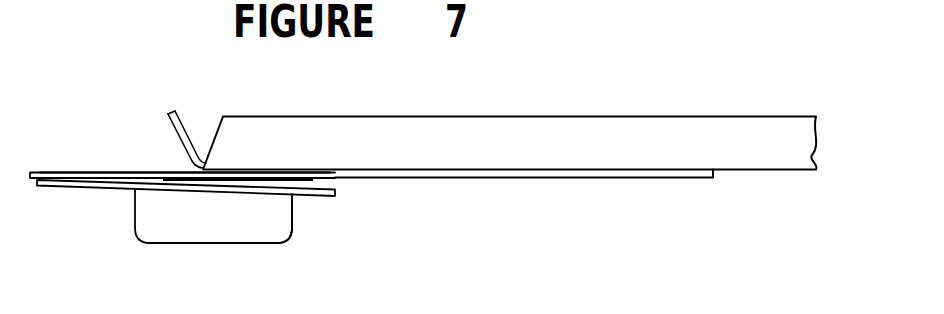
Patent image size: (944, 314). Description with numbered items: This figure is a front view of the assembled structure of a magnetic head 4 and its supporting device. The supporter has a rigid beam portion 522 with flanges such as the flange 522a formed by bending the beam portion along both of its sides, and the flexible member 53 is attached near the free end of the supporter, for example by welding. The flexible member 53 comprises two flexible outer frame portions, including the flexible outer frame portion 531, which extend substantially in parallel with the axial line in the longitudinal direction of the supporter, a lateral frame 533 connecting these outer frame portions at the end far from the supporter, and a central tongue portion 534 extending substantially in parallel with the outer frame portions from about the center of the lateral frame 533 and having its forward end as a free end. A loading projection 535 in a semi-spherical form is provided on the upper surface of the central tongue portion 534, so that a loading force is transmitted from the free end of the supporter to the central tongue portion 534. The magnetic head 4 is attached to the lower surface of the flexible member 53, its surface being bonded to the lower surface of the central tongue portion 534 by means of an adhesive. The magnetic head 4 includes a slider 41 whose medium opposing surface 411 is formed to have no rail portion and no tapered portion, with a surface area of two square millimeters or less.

The magnetic head 4 is at (296, 220).
The slider 41 is at (257, 222).
The medium opposing surface 411 is at (196, 248).
The flexible member 53 is at (507, 177).
The rigid beam portion 522 is at (441, 114).
The flange 522a is at (617, 140).
The flexible outer frame portion 531 is at (118, 171).
The lateral frame 533 is at (69, 189).
The central tongue portion 534 is at (312, 179).
The loading projection 535 is at (224, 178).